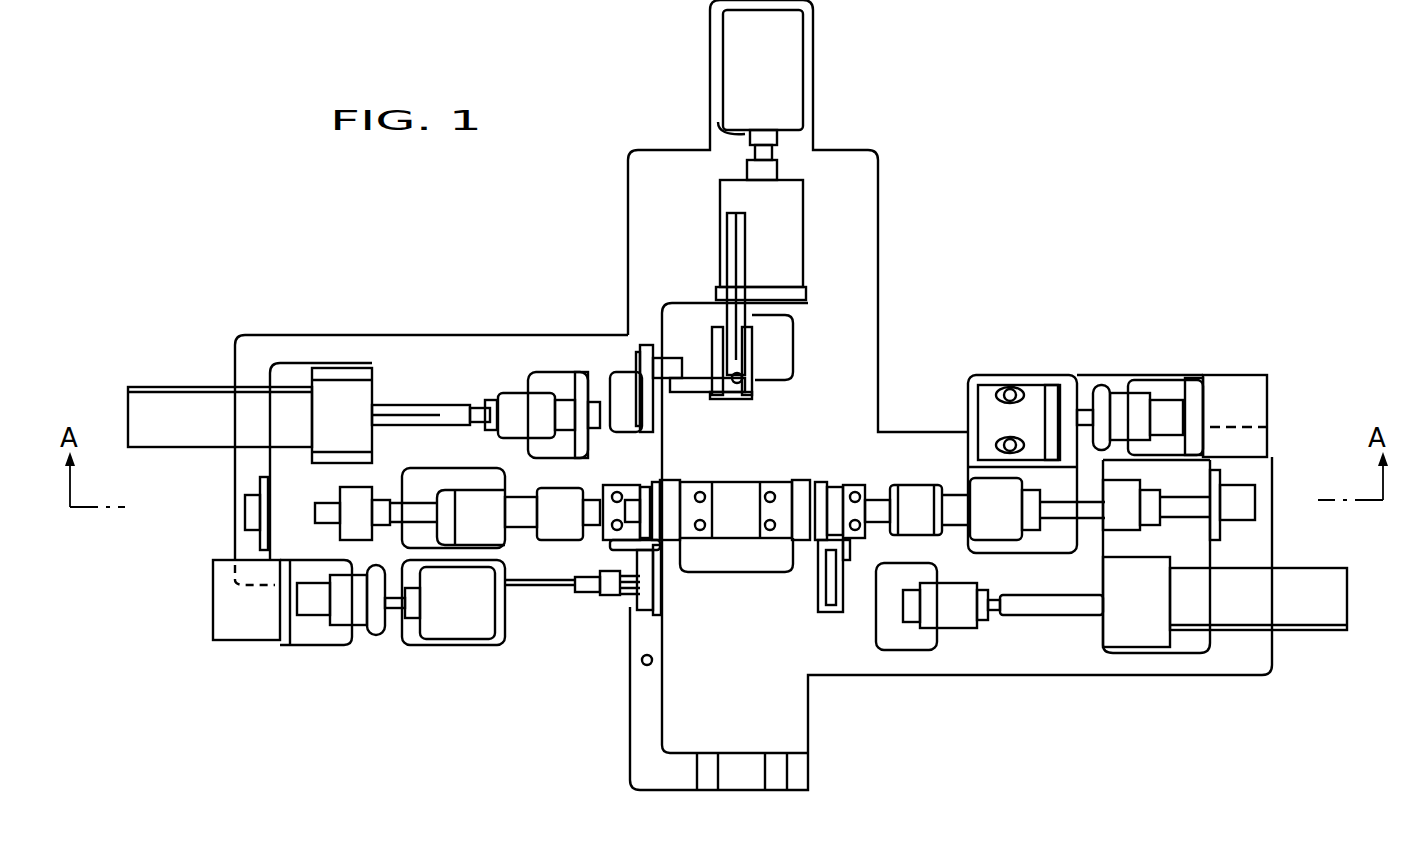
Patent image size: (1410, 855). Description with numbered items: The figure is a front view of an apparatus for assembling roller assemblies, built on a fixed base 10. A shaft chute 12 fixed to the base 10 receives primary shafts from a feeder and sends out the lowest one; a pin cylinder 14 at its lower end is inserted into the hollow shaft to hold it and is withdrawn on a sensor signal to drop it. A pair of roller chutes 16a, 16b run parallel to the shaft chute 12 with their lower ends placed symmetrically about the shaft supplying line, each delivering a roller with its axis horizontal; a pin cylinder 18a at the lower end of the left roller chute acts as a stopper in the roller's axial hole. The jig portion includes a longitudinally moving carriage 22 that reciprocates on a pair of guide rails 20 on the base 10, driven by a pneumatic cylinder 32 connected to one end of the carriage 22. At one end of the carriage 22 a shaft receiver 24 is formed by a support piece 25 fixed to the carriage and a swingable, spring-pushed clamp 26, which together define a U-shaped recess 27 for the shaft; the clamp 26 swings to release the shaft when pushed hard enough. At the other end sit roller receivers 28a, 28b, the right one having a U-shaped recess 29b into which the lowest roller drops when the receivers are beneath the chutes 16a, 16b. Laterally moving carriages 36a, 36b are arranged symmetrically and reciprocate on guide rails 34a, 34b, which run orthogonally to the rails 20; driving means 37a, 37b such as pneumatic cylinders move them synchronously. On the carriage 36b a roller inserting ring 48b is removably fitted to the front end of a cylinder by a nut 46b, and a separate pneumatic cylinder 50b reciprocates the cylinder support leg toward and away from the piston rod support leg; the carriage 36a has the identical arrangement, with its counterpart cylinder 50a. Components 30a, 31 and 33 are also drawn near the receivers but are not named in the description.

The fixed base 10 is at (640, 717).
The chute 12 is at (730, 240).
The pin cylinder 14 is at (698, 383).
The roller chute 16a is at (634, 598).
The roller chute 16b is at (830, 615).
The pin cylinder 18a is at (583, 590).
The guide rails 20 is at (772, 768).
The longitudinally moving carriage 22 is at (680, 630).
The shaft receiver 24 is at (778, 349).
The support piece 25 is at (748, 348).
The clamp 26 is at (733, 399).
The U-shaped recess 27 is at (742, 377).
The roller receiver 28a is at (608, 476).
The roller receiver 28b is at (834, 466).
The U-shaped recess 29b is at (837, 546).
The clamp plate 30a is at (651, 488).
The spacer plate 31 is at (660, 490).
The pneumatic cylinder 32 is at (793, 52).
The mounting plate 33 is at (672, 500).
The guide rail 34a is at (248, 510).
The guide rail 34b is at (1250, 503).
The laterally moving carriage 36a is at (318, 662).
The laterally moving carriage 36b is at (1092, 378).
The driving means 37a is at (215, 395).
The driving means 37b is at (1237, 633).
The nut 46b is at (913, 500).
The roller inserting ring 48b is at (873, 495).
The block 50a is at (250, 630).
The pneumatic cylinder 50b is at (1237, 378).